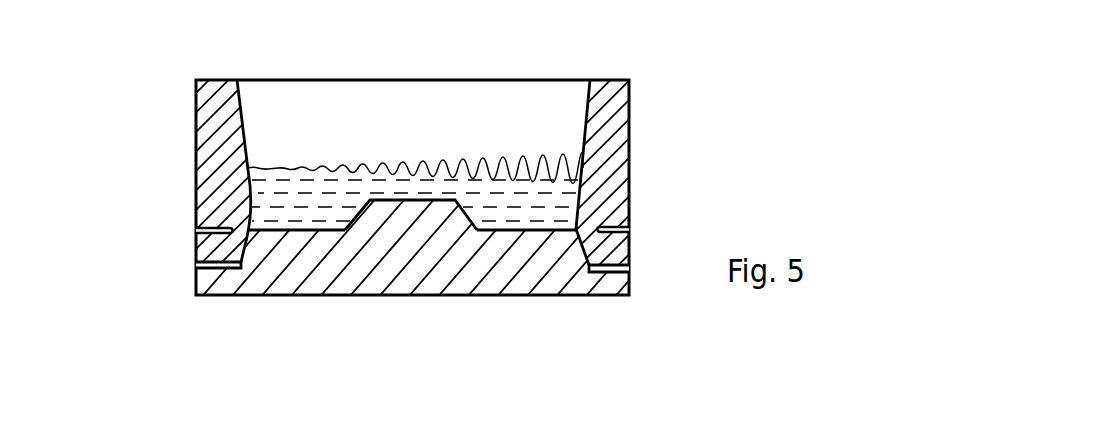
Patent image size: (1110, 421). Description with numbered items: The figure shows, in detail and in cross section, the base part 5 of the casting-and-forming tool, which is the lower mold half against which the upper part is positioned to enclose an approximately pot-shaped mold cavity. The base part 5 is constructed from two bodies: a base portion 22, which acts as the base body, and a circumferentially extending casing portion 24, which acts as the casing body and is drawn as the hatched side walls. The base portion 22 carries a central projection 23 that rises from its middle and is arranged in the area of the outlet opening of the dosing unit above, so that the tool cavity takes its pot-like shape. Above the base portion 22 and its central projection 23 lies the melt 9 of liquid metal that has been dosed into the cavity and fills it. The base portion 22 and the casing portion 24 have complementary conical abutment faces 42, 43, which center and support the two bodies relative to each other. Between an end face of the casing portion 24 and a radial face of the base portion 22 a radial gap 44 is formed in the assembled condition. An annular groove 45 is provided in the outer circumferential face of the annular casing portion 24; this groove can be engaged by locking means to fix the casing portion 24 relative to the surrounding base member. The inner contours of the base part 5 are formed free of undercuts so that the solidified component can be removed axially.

The base part 5 is at (141, 163).
The melt 9 is at (522, 183).
The base portion 22 is at (423, 277).
The central projection 23 is at (422, 212).
The casing portion 24 is at (630, 142).
The conical abutment face 42 is at (594, 247).
The conical abutment face 43 is at (578, 262).
The radial gap 44 is at (630, 270).
The annular groove 45 is at (600, 228).